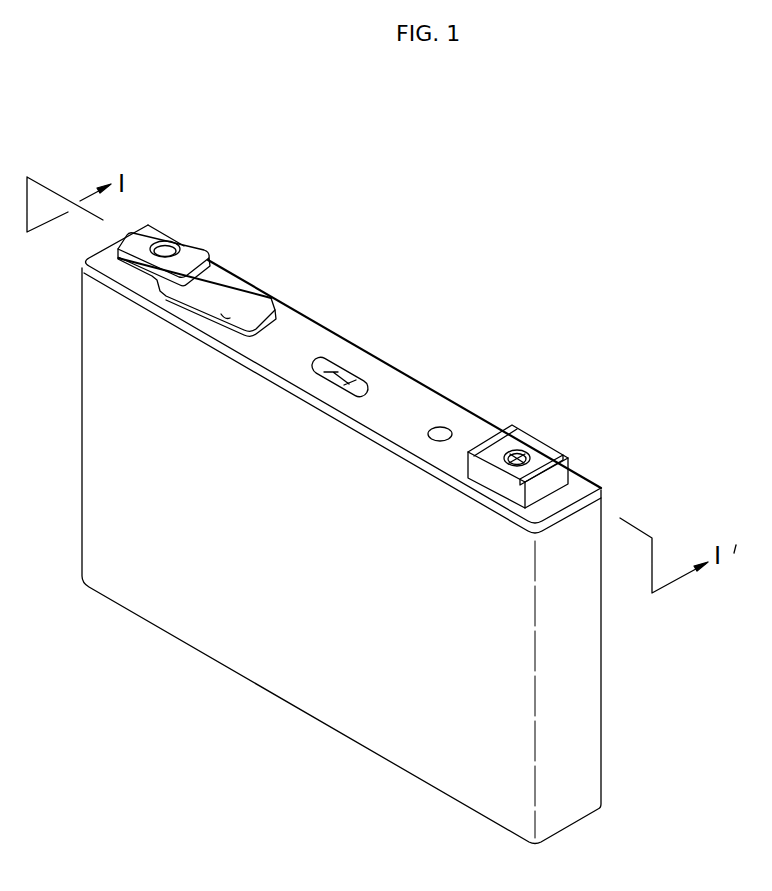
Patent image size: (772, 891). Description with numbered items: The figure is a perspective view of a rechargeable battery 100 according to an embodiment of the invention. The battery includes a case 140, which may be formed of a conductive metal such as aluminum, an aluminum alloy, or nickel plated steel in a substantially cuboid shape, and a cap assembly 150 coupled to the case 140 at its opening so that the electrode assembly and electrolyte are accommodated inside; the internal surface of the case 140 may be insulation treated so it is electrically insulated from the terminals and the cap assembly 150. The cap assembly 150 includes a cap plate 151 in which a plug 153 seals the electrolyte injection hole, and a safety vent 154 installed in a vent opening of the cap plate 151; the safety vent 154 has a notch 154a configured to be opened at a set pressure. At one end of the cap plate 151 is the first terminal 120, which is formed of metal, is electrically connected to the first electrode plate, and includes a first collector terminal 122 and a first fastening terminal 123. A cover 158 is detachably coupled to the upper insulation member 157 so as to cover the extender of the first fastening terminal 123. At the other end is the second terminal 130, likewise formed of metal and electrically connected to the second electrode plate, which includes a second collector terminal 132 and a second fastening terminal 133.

The rechargeable battery 100 is at (626, 216).
The first terminal 120 is at (238, 240).
The first collector terminal 122 is at (168, 250).
The first fastening terminal 123 is at (190, 256).
The second terminal 130 is at (556, 423).
The second collector terminal 132 is at (517, 453).
The second fastening terminal 133 is at (538, 453).
The case 140 is at (287, 683).
The cap assembly 150 is at (416, 378).
The cap plate 151 is at (288, 326).
The plug 153 is at (443, 428).
The safety vent 154 is at (340, 362).
The notch 154a is at (348, 382).
The upper insulation member 157 is at (263, 283).
The cover 158 is at (237, 283).